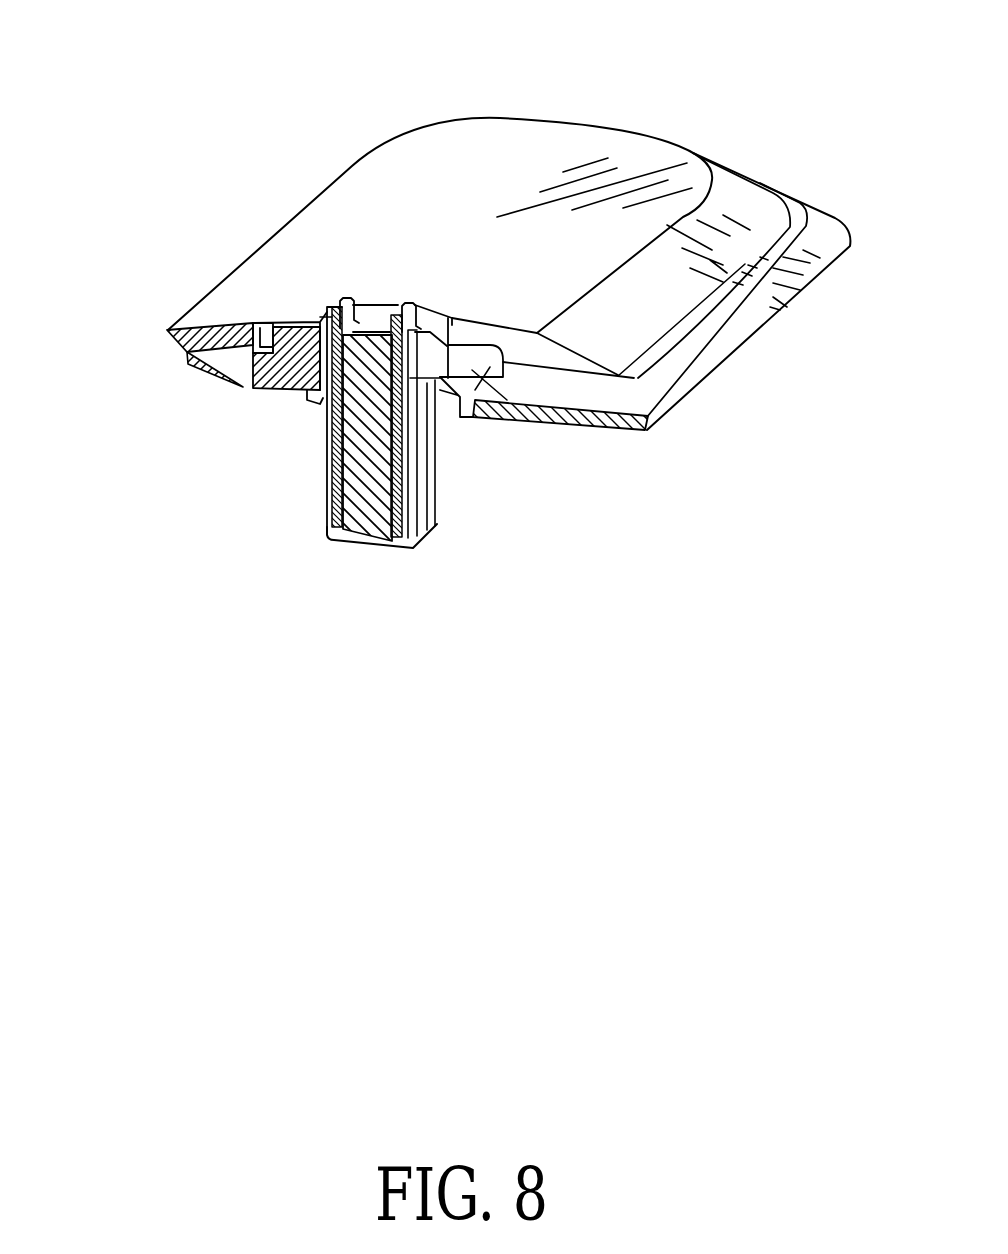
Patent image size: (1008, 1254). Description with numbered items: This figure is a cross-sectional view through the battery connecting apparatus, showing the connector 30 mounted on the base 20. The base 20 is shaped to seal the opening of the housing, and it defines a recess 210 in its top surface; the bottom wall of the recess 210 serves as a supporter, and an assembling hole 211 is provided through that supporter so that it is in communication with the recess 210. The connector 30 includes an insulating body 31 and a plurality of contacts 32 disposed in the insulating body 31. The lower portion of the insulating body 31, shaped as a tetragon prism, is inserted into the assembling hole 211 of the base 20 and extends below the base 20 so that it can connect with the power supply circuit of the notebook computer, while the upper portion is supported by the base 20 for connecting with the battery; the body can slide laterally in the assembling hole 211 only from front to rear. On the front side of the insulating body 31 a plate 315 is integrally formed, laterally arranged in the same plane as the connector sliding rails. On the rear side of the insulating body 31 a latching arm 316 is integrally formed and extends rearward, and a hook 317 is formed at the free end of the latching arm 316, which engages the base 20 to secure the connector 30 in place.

The base 20 is at (478, 192).
The connector 30 is at (377, 320).
The insulating body 31 is at (372, 483).
The contacts 32 is at (327, 443).
The recess 210 is at (567, 385).
The assembling hole 211 is at (443, 410).
The plate 315 is at (537, 417).
The latching arm 316 is at (260, 318).
The hook 317 is at (250, 383).